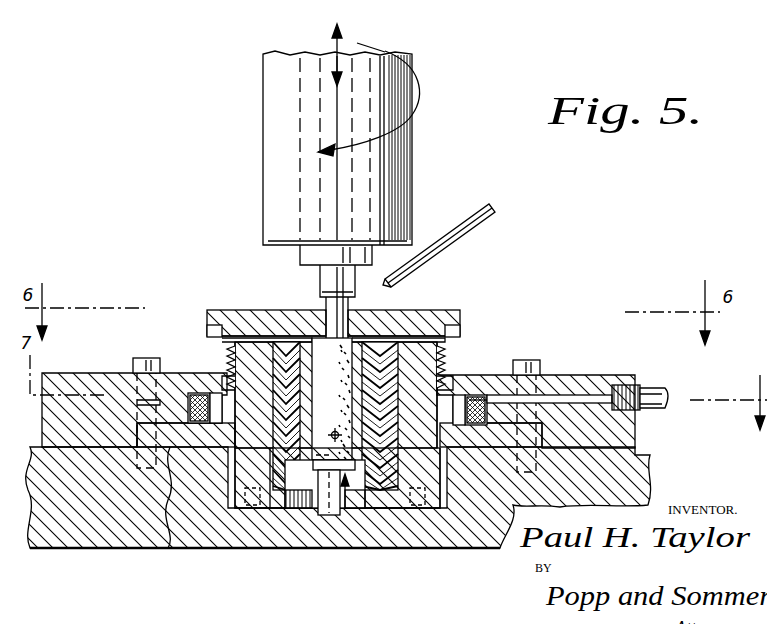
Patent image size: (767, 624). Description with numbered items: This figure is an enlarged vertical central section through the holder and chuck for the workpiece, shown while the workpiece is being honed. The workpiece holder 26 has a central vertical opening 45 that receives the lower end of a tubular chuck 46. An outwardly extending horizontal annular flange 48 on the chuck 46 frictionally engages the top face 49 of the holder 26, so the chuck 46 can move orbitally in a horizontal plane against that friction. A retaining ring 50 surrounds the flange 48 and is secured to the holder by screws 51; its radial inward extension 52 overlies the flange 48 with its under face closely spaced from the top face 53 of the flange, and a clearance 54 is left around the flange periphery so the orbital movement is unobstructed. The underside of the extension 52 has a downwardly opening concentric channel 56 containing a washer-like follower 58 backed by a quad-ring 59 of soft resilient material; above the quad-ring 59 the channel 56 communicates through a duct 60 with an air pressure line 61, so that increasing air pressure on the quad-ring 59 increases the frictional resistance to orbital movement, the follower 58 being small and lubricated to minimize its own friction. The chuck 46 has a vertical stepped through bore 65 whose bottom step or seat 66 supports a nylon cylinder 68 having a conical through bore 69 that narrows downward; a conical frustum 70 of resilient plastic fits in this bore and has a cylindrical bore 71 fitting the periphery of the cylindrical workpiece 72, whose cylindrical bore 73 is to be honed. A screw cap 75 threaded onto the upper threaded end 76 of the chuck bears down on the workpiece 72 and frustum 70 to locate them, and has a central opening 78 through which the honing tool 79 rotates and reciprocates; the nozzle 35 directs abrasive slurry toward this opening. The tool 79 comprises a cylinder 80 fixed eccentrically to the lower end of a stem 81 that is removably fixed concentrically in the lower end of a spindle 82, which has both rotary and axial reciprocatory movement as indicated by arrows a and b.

The workpiece holder 26 is at (646, 484).
The nozzle 35 is at (459, 228).
The central vertical opening 45 is at (228, 550).
The tubular chuck 46 is at (401, 514).
The horizontal annular flange 48 is at (168, 548).
The top face of workpiece holder 49 is at (643, 450).
The retaining ring 50 is at (617, 373).
The screws 51 is at (145, 356).
The radial inward extension 52 is at (175, 396).
The top face of flange 53 is at (156, 404).
The clearance 54 is at (565, 408).
The concentric channel 56 is at (474, 396).
The washer-like follower 58 is at (491, 394).
The quad-ring 59 is at (195, 392).
The duct 60 is at (553, 397).
The air pressure line 61 is at (646, 392).
The vertical stepped through bore 65 is at (382, 515).
The bottom step or seat 66 is at (277, 508).
The nylon cylinder 68 is at (427, 510).
The conical through bore 69 is at (406, 341).
The conical frustum 70 is at (278, 308).
The cylindrical bore of frustum 71 is at (312, 338).
The workpiece 72 is at (313, 507).
The cylindrical bore of workpiece 73 is at (342, 393).
The screw cap 75 is at (468, 314).
The upper threaded end of chuck 76 is at (456, 342).
The central opening of screw cap 78 is at (361, 333).
The honing tool 79 is at (345, 516).
The cylinder of honing tool 80 is at (325, 435).
The stem 81 is at (342, 302).
The spindle 82 is at (288, 95).
The arrow indicating rotary movement a is at (420, 100).
The arrow indicating axial reciprocatory movement b is at (324, 38).